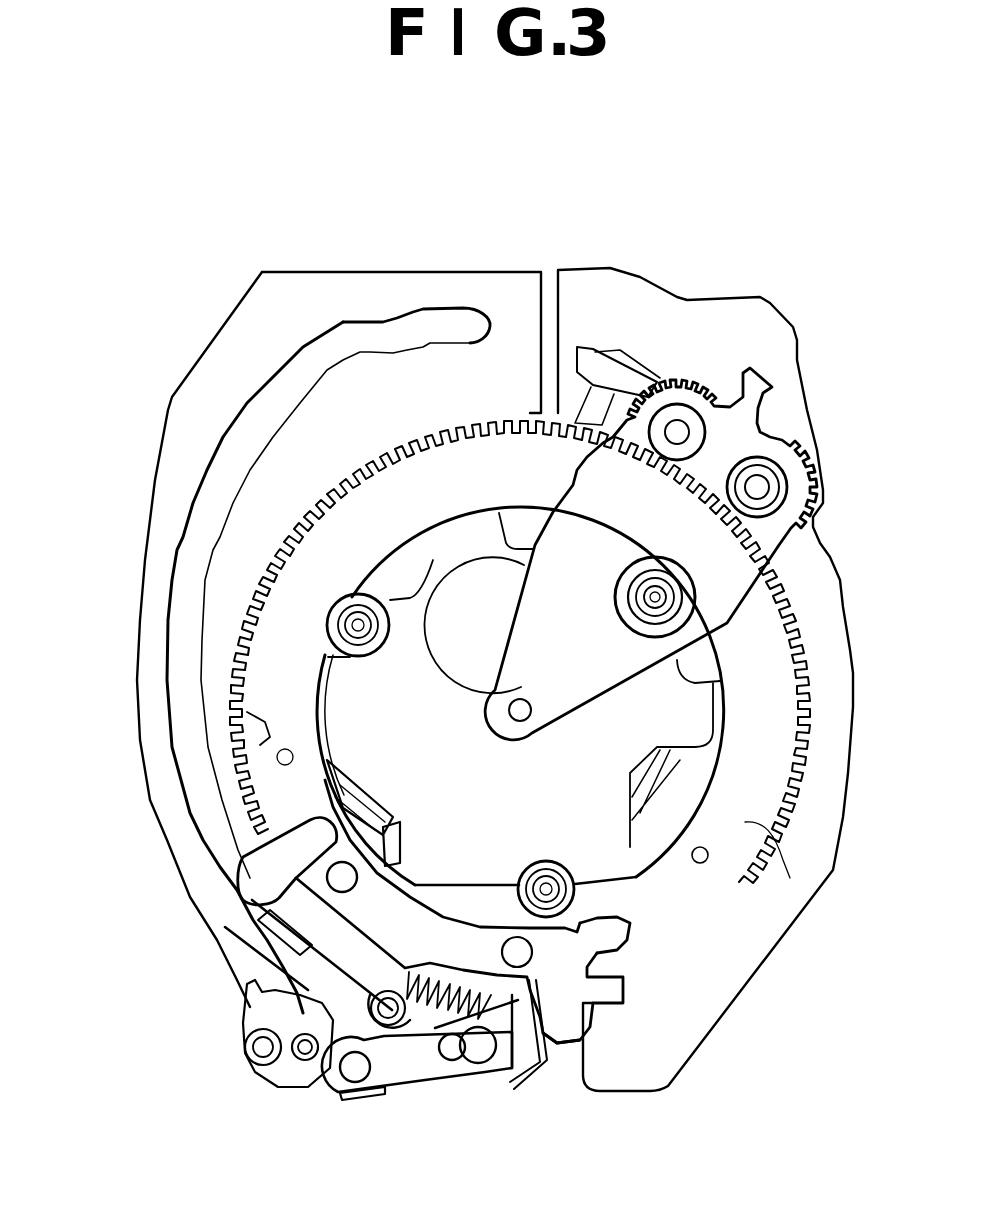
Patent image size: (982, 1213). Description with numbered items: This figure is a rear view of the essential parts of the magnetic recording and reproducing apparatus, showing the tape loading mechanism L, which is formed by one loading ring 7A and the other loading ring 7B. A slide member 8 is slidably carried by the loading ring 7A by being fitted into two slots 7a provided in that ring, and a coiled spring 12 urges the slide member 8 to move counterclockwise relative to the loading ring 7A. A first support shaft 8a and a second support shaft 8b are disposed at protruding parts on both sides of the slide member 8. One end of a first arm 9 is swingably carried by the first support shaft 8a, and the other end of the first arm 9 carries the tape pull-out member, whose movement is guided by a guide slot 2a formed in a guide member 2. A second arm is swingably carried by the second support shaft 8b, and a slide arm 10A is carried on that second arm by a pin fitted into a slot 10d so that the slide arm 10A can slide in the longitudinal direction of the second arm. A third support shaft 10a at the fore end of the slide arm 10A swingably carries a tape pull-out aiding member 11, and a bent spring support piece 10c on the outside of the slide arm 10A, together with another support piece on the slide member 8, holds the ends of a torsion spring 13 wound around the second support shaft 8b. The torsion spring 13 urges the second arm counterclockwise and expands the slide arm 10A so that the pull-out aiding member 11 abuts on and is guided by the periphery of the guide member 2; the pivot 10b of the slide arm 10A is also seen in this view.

The guide member 2 is at (163, 778).
The guide slot 2a is at (188, 722).
The loading mechanism L is at (240, 610).
The loading ring 7A is at (750, 823).
The loading ring 7B is at (290, 810).
The slots 7a is at (612, 933).
The slide member 8 is at (580, 1017).
The first support shaft 8a is at (250, 883).
The second support shaft 8b is at (590, 1073).
The first arm 9 is at (270, 925).
The slide arm 10A is at (400, 1075).
The third support shaft 10a is at (342, 1097).
The pivot hole of link lever 10b is at (355, 1075).
The spring support piece 10c is at (497, 1073).
The slot 10d is at (452, 1060).
The tape pull-out aiding member 11 is at (283, 1066).
The coiled spring 12 is at (428, 1060).
The torsion spring 13 is at (532, 1070).